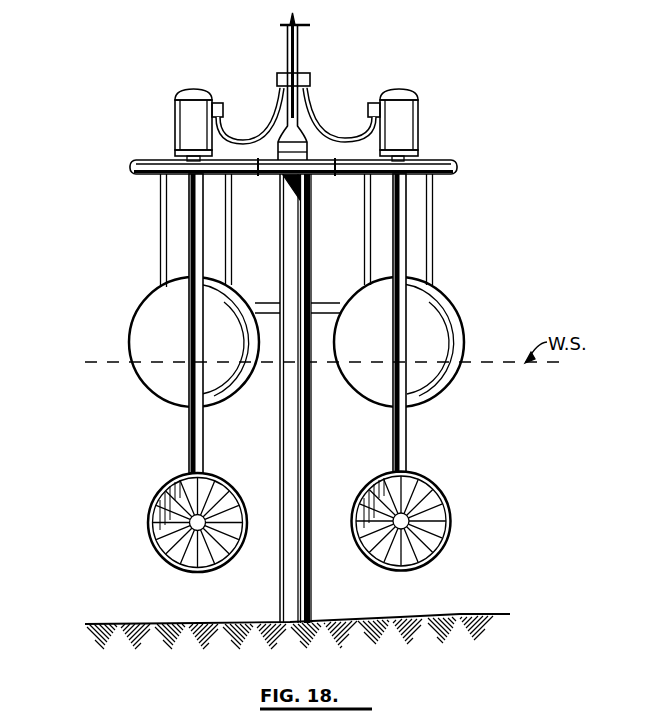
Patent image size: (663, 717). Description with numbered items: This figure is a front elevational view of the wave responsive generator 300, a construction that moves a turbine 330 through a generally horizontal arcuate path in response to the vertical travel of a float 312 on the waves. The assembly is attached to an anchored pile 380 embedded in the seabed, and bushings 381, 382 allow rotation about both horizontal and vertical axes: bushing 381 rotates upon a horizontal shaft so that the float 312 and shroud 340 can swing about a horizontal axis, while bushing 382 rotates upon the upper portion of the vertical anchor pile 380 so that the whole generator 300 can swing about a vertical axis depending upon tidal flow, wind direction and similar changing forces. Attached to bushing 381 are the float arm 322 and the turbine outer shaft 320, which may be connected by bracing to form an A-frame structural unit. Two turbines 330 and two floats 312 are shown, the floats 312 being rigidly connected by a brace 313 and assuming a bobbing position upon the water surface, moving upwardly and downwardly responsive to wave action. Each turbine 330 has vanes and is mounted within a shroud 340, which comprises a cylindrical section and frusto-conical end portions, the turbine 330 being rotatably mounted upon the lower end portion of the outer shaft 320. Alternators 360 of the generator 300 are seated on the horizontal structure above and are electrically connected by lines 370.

The wave responsive generator 300 is at (495, 260).
The float 312 is at (148, 328).
The brace 313 is at (332, 302).
The turbine outer shaft 320 is at (188, 445).
The float arm 322 is at (228, 218).
The turbine 330 is at (158, 522).
The shroud 340 is at (185, 567).
The alternator 360 is at (190, 92).
The line 370 is at (332, 128).
The anchor pile 380 is at (296, 576).
The bushing 381 is at (322, 163).
The bushing 382 is at (285, 152).